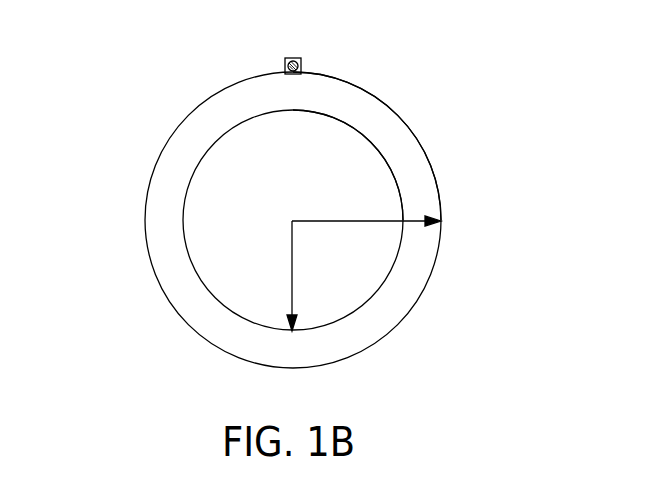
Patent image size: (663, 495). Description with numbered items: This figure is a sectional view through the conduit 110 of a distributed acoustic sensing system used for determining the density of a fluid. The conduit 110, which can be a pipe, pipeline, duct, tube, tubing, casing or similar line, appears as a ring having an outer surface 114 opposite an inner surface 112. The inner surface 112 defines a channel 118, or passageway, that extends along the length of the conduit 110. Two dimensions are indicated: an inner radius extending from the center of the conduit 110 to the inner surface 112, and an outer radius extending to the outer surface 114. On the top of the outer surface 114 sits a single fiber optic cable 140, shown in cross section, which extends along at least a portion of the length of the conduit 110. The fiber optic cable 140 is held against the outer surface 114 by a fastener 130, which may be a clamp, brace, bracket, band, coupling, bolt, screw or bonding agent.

The conduit 110 is at (162, 193).
The inner surface 112 is at (330, 118).
The outer surface 114 is at (390, 105).
The channel 118 is at (250, 220).
The fastener 130 is at (294, 58).
The fiber optic cable 140 is at (284, 68).